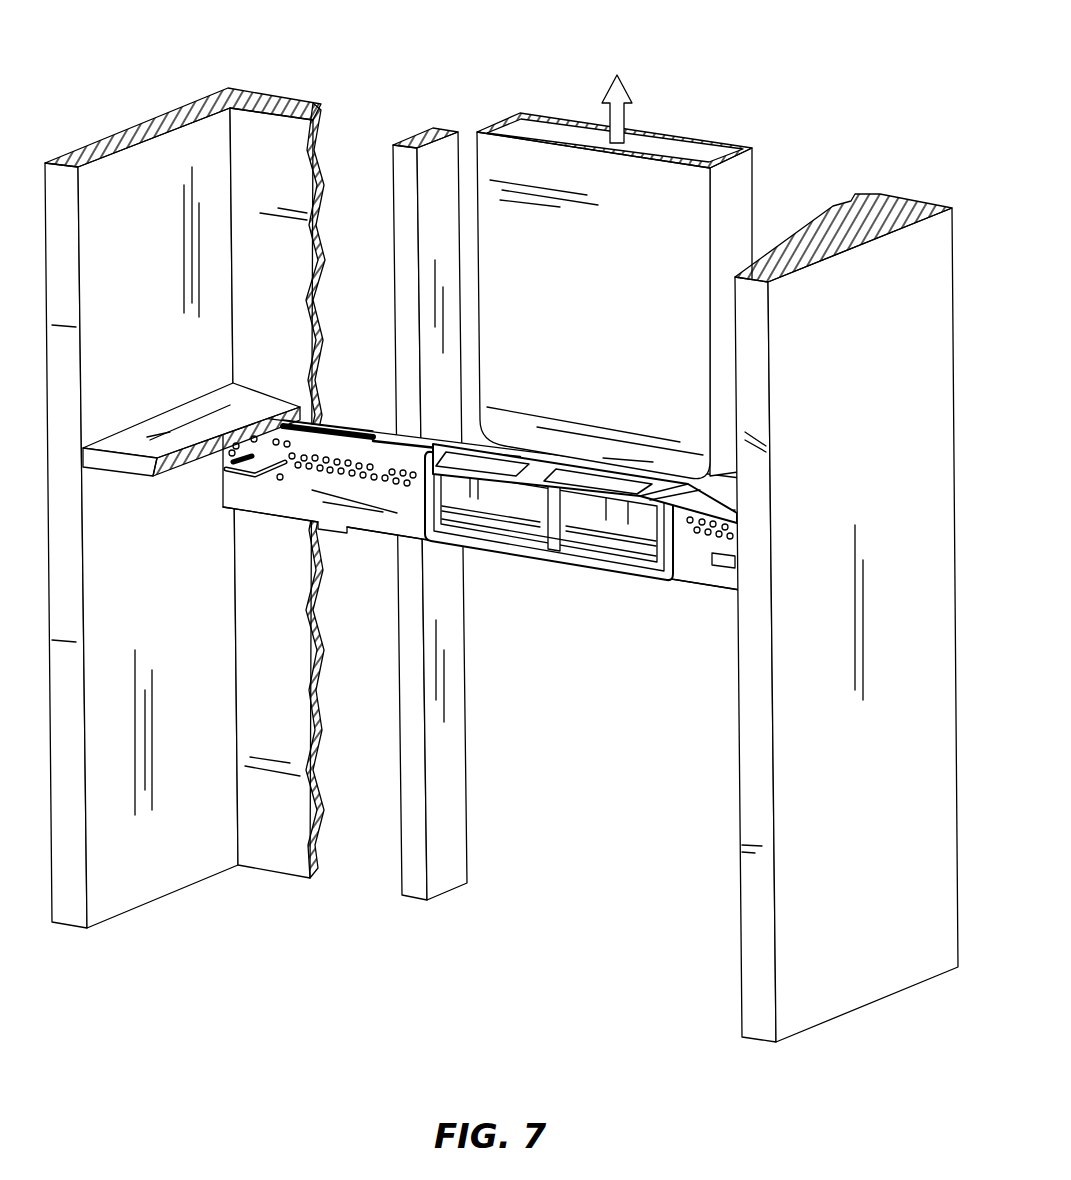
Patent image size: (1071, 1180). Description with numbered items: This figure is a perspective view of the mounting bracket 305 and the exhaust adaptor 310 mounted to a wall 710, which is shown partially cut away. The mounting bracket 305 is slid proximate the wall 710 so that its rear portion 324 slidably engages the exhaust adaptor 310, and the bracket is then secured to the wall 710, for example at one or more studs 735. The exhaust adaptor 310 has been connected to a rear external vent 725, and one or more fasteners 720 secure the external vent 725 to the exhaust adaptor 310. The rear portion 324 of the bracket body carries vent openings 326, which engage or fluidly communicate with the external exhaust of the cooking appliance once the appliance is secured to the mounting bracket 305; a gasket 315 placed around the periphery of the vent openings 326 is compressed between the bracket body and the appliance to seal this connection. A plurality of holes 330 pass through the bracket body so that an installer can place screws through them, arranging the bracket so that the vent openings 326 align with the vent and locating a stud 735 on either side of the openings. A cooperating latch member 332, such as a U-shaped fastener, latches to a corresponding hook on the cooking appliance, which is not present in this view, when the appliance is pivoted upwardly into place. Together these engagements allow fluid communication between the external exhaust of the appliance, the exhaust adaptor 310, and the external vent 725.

The wall 710 is at (260, 145).
The stud 735 is at (440, 168).
The rear external vent 725 is at (673, 208).
The fastener 720 is at (515, 450).
The holes 330 is at (343, 430).
The mounting bracket 305 is at (367, 522).
The rear portion 324 is at (421, 530).
The cooperating latch member 332 is at (257, 480).
The vent opening 326 is at (488, 498).
The gasket 315 is at (530, 552).
The exhaust adaptor 310 is at (638, 565).